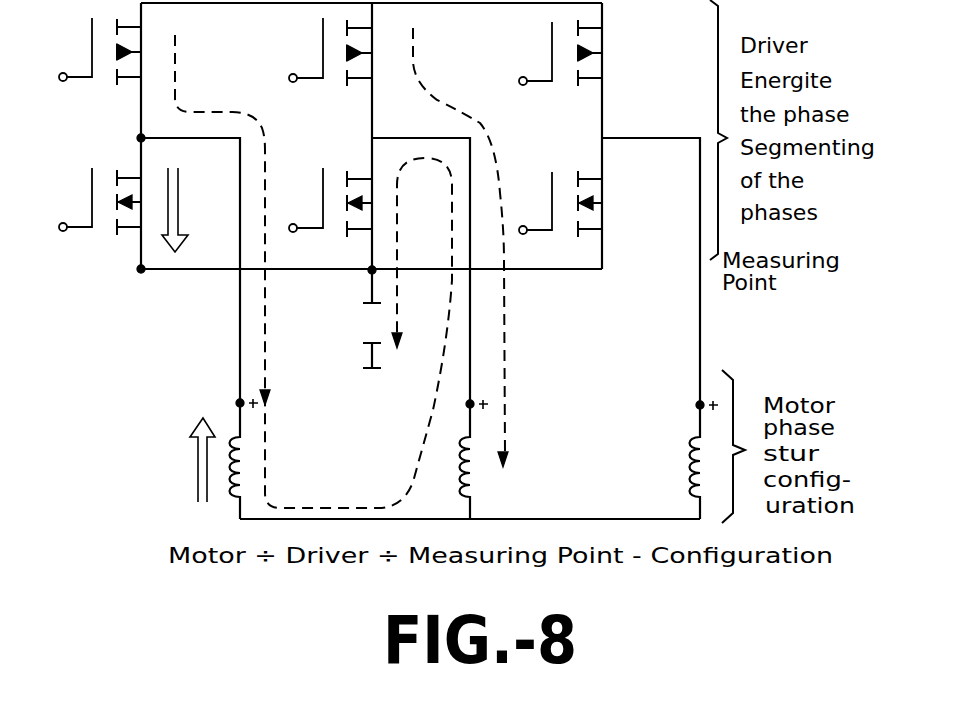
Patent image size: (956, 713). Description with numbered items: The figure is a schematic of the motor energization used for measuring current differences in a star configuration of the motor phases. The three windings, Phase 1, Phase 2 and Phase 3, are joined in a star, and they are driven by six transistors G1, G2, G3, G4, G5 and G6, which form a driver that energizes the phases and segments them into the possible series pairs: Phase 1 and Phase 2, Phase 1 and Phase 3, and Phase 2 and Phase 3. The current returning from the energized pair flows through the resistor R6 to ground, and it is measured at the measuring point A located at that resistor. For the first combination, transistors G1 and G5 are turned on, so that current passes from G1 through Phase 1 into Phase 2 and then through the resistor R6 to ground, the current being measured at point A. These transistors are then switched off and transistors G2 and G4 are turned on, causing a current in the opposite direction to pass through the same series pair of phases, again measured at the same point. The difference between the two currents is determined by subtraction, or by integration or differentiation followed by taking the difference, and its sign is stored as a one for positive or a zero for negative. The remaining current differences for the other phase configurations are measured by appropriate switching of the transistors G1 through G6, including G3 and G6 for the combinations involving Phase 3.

The transistor G1 is at (91, 51).
The transistor G2 is at (321, 52).
The transistor G3 is at (552, 53).
The transistor G4 is at (90, 201).
The transistor G5 is at (327, 202).
The transistor G6 is at (556, 204).
The measuring point A is at (361, 281).
The resistor R6 is at (354, 319).
The phase 1 is at (208, 461).
The phase 2 is at (448, 461).
The phase 3 is at (678, 462).